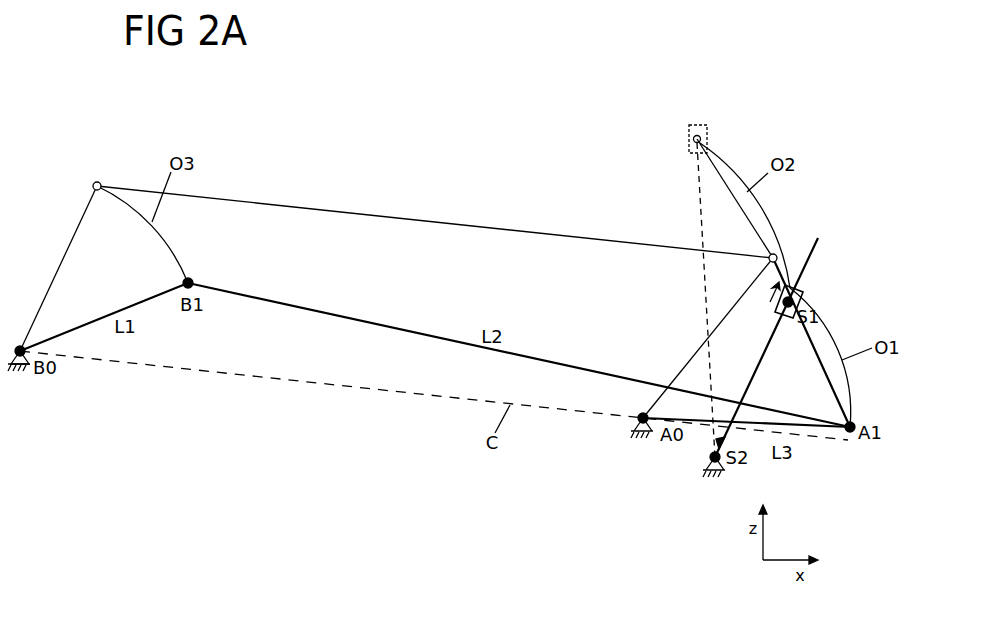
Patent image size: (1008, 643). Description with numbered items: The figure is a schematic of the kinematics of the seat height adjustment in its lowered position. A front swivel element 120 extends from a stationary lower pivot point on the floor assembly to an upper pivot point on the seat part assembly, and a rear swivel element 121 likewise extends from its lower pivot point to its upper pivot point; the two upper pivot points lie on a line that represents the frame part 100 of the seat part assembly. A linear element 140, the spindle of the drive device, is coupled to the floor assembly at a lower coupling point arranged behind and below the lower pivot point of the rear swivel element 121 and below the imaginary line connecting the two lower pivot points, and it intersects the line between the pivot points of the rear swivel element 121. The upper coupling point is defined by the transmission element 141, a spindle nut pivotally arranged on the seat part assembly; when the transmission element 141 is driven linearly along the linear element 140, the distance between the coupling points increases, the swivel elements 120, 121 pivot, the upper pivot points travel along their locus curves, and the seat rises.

The frame part 100 is at (395, 327).
The swivel element 120 is at (120, 310).
The swivel element 121 is at (810, 428).
The linear element 140 is at (767, 348).
The transmission element 141 is at (805, 292).